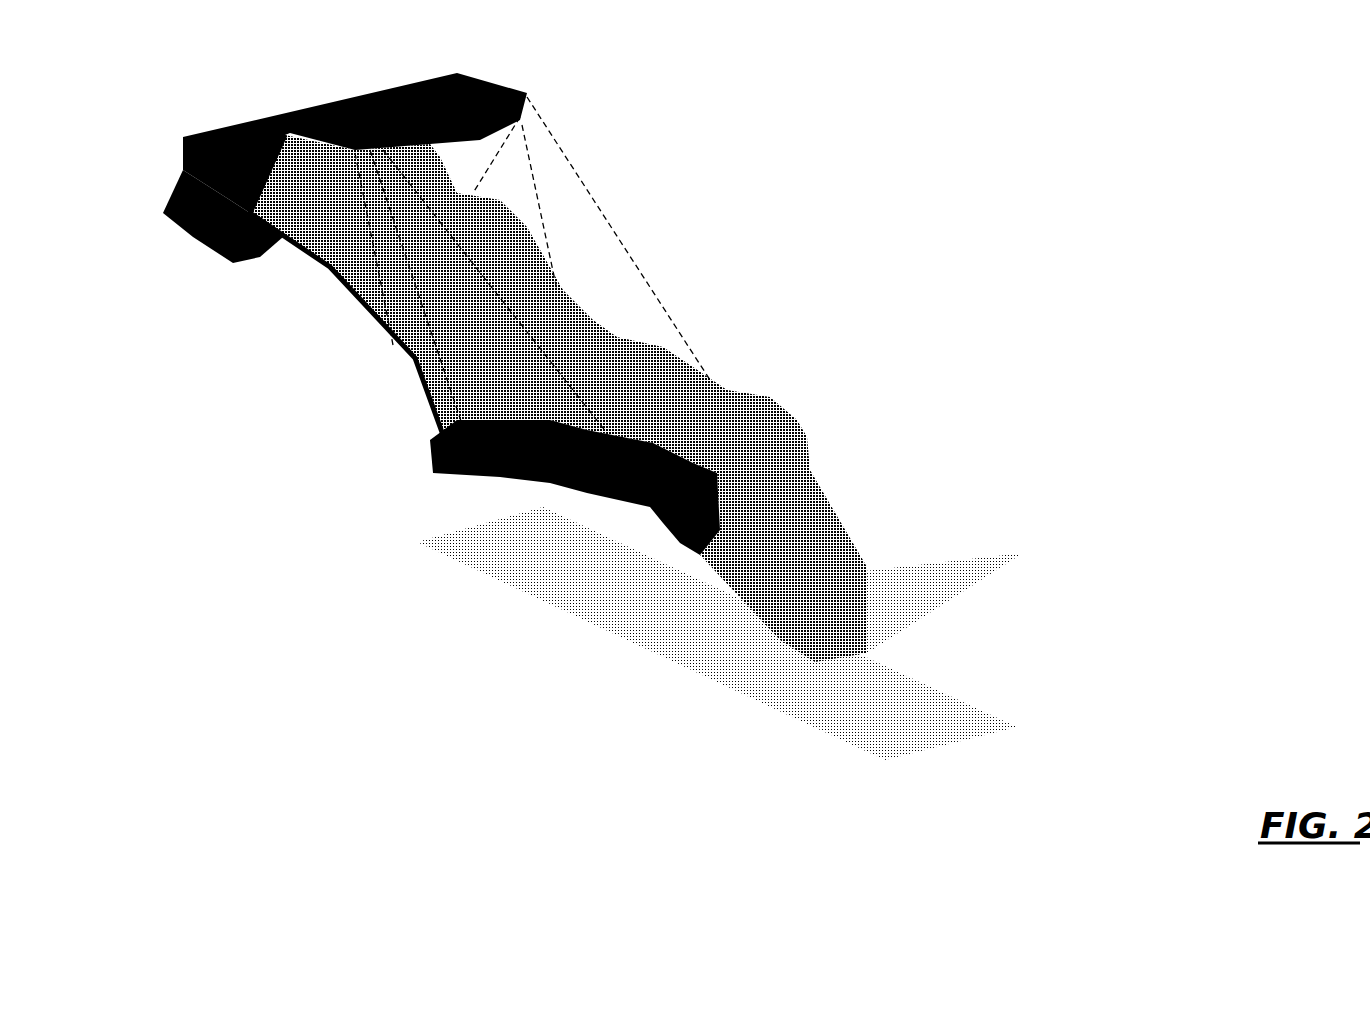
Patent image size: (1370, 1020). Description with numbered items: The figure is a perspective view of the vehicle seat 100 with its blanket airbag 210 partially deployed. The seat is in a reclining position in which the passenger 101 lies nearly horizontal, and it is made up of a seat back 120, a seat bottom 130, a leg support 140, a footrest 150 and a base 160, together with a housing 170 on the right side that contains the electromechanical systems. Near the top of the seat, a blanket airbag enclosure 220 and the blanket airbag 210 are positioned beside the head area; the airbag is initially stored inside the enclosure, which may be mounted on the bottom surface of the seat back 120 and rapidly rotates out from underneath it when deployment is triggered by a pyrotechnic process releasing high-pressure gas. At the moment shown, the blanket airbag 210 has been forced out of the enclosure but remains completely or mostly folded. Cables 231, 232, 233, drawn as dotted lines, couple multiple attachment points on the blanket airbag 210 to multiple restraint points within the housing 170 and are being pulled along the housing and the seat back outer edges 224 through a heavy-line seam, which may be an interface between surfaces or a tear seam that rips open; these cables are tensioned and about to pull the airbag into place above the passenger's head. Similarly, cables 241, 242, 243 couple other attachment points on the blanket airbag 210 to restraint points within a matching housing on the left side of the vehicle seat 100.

The vehicle seat 100 is at (1108, 223).
The passenger 101 is at (803, 463).
The seat back 120 is at (333, 285).
The seat bottom 130 is at (580, 473).
The leg support 140 is at (693, 567).
The footrest 150 is at (972, 577).
The base 160 is at (917, 737).
The housing 170 is at (443, 457).
The blanket airbag 210 is at (505, 95).
The blanket airbag enclosure 220 is at (183, 182).
The seat back outer edges 224 is at (302, 260).
The cable 231 is at (377, 297).
The cable 232 is at (430, 331).
The cable 233 is at (523, 333).
The cable 241 is at (487, 160).
The cable 242 is at (537, 213).
The cable 243 is at (627, 260).